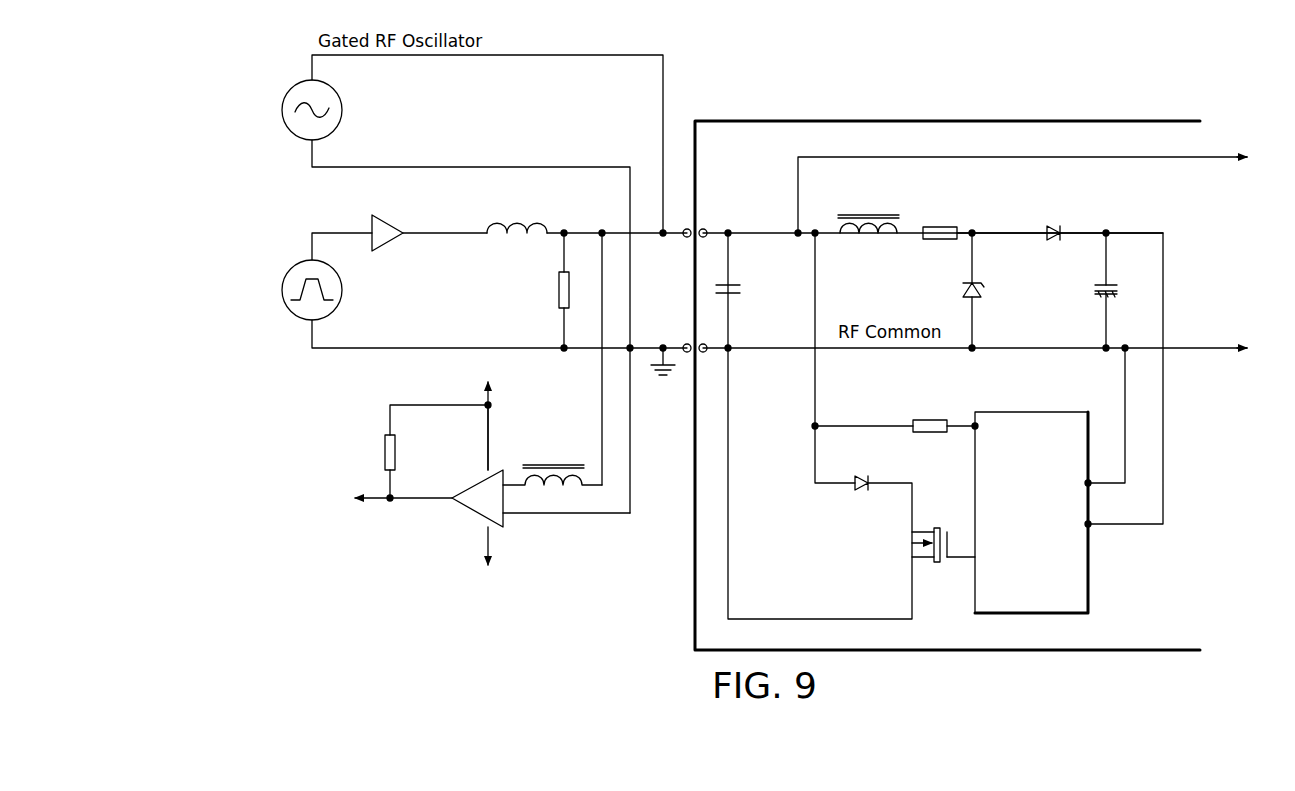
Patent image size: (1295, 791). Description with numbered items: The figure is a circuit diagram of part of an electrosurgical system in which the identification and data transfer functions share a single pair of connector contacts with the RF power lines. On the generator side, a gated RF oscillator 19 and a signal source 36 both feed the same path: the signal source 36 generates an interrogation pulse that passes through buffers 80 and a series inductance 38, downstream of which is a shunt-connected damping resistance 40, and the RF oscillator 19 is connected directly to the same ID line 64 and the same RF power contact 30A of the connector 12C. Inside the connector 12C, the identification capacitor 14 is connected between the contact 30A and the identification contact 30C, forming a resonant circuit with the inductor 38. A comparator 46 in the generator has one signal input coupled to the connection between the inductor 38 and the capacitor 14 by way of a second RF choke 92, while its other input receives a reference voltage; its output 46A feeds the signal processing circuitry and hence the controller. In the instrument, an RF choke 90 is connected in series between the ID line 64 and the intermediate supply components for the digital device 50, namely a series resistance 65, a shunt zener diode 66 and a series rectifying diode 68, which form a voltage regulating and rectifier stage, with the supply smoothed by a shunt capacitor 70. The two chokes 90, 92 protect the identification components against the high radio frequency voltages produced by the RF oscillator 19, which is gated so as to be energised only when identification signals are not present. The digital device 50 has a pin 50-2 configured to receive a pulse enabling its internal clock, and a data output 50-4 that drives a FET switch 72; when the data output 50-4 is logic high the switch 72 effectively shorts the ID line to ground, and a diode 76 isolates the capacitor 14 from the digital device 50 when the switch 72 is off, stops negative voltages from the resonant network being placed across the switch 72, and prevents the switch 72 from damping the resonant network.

The RF oscillator 19 is at (342, 110).
The signal source 36 is at (342, 290).
The buffers 80 is at (378, 213).
The inductance 38 is at (526, 215).
The damping resistance 40 is at (558, 290).
The comparator 46 is at (475, 515).
The comparator output 46A is at (437, 497).
The second RF choke 92 is at (555, 463).
The connector 12C is at (1175, 120).
The RF power contact 30A is at (705, 228).
The identification contact 30C is at (705, 353).
The capacitor 14 is at (743, 290).
The RF choke 90 is at (868, 214).
The ID line 64 is at (1005, 232).
The series resistance 65 is at (938, 241).
The shunt zener diode 66 is at (983, 290).
The series rectifying diode 68 is at (1052, 224).
The shunt capacitor 70 is at (1112, 283).
The digital device 50 is at (1089, 605).
The pin 50-2 is at (962, 424).
The data output 50-4 is at (958, 560).
The switch 72 is at (932, 527).
The diode 76 is at (860, 491).